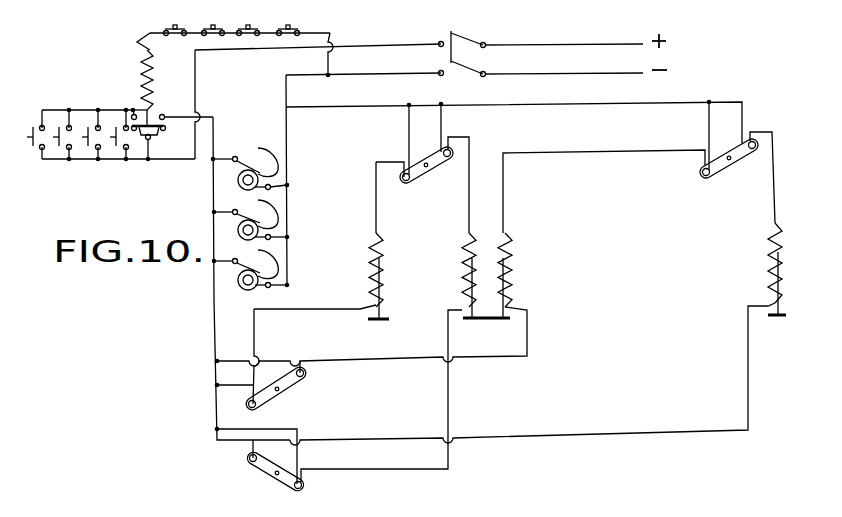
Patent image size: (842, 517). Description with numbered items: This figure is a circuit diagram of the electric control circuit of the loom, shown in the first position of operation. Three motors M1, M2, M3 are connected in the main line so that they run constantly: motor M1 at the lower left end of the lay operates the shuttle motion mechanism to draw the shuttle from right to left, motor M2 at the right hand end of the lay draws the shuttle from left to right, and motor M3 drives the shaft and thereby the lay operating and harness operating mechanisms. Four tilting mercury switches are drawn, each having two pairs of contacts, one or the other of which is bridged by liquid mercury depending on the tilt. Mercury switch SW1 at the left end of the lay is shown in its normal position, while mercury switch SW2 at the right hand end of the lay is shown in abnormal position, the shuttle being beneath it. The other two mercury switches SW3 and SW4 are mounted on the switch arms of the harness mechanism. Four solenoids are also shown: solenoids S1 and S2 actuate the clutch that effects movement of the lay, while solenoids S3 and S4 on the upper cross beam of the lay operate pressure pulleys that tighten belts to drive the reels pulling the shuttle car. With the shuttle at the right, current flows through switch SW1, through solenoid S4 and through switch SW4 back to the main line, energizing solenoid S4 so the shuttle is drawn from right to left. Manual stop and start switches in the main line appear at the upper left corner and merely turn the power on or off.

The motor M1 is at (250, 166).
The motor M2 is at (250, 218).
The motor M3 is at (250, 269).
The mercury switch SW1 is at (414, 170).
The mercury switch SW2 is at (717, 161).
The mercury switch SW3 is at (288, 471).
The mercury switch SW4 is at (267, 396).
The solenoid S1 is at (463, 277).
The solenoid S2 is at (512, 278).
The solenoid S3 is at (767, 271).
The solenoid S4 is at (371, 282).